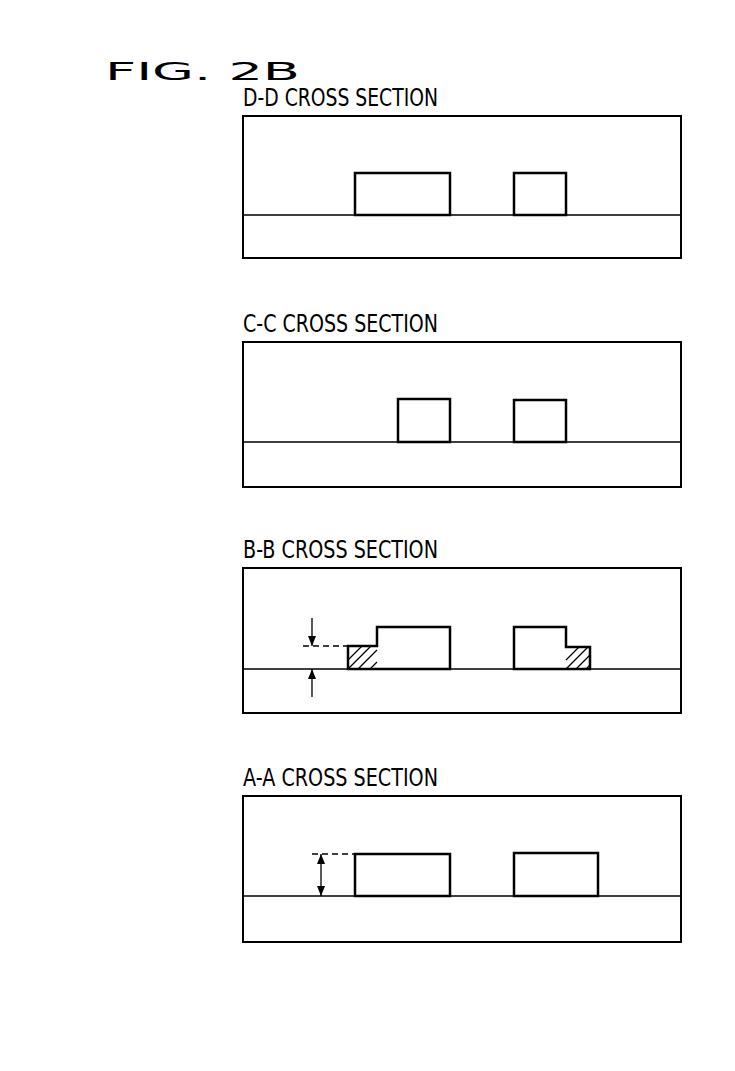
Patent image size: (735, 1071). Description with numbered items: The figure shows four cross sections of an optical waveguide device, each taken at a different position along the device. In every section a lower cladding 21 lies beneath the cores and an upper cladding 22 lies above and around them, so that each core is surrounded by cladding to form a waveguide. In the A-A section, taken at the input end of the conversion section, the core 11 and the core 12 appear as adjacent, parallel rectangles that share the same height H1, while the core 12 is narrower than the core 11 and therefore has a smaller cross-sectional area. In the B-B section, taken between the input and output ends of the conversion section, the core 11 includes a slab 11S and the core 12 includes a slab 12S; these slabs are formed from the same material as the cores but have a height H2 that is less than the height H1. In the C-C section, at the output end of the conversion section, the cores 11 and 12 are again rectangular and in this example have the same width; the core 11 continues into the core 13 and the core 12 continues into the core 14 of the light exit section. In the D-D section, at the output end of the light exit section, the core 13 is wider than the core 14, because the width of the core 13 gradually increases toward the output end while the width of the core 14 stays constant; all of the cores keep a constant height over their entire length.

The core 11 is at (424, 382).
The core 12 is at (541, 382).
The core 13 is at (401, 172).
The core 14 is at (540, 172).
The slab 11S is at (354, 645).
The slab 12S is at (580, 646).
The lower cladding 21 is at (670, 247).
The upper cladding 22 is at (670, 185).
The height H1 is at (319, 875).
The height H2 is at (309, 657).